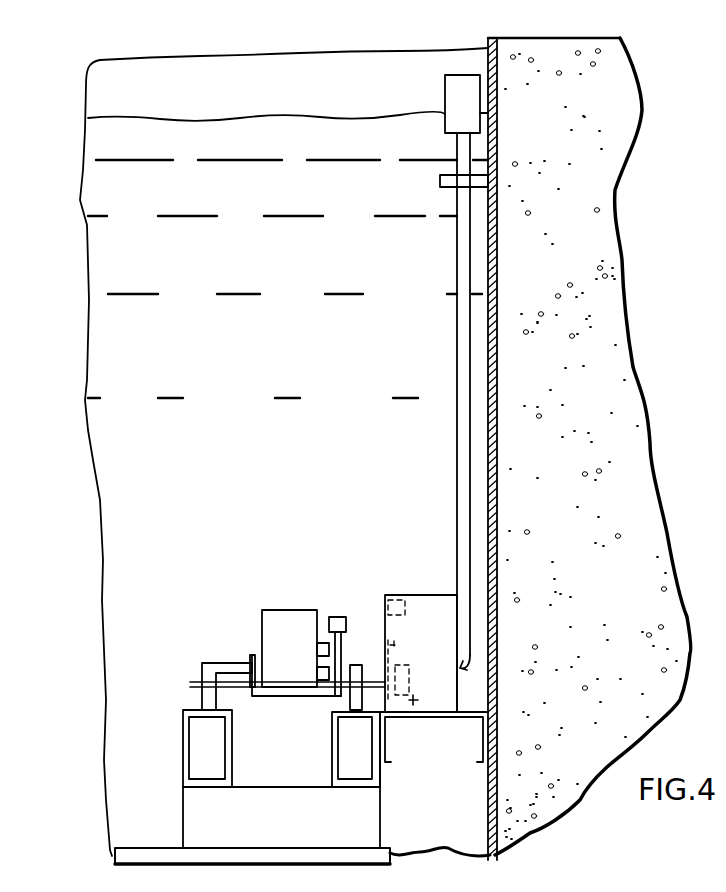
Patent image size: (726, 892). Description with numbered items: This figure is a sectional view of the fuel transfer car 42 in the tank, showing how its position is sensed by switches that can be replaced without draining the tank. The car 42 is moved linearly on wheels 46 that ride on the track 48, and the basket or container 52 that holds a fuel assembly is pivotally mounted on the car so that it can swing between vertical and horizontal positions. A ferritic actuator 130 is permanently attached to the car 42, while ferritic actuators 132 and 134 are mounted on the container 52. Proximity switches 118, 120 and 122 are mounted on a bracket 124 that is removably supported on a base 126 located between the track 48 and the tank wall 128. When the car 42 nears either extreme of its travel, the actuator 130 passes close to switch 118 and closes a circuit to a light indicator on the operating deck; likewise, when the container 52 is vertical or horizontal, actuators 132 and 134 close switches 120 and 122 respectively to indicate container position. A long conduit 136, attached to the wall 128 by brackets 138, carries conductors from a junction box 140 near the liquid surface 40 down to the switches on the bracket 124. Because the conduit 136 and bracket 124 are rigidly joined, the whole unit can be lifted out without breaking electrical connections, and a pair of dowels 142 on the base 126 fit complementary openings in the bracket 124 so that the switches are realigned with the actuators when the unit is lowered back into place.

The liquid surface 40 is at (206, 117).
The car 42 is at (246, 636).
The wheels 46 is at (201, 695).
The rails 48 is at (186, 737).
The container 52 is at (268, 610).
The switch 118 is at (387, 612).
The switch 120 is at (453, 668).
The switch 122 is at (386, 700).
The bracket 124 is at (436, 595).
The base 126 is at (385, 750).
The tank wall 128 is at (490, 446).
The ferritic actuator 130 is at (335, 617).
The ferritic actuator 132 is at (318, 650).
The ferritic actuator 134 is at (318, 674).
The conduit 136 is at (457, 350).
The brackets 138 is at (440, 181).
The junction box 140 is at (445, 92).
The dowels 142 is at (414, 705).